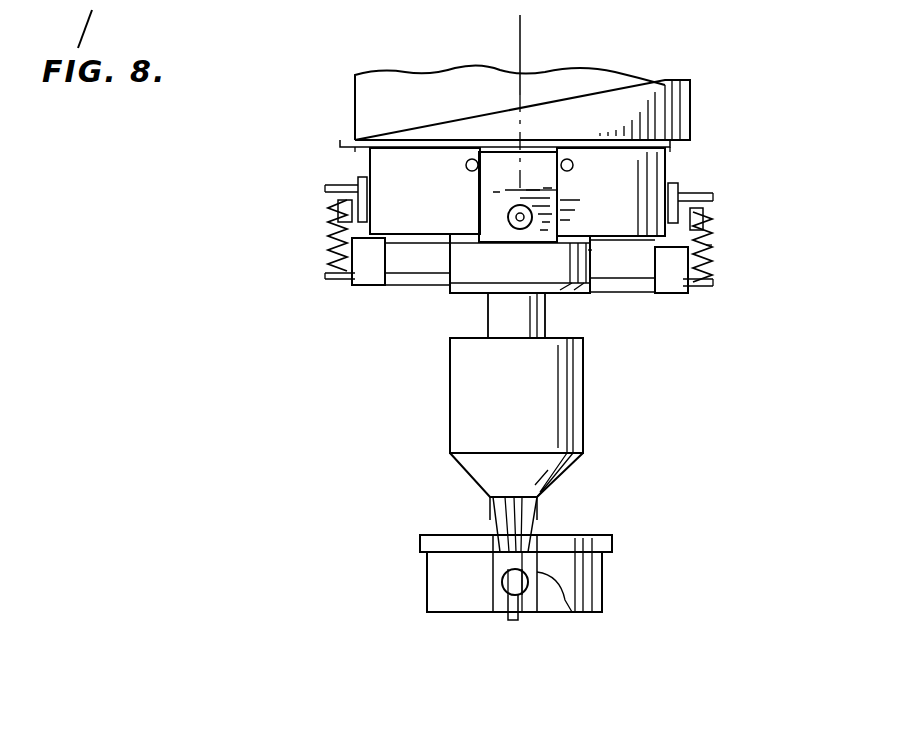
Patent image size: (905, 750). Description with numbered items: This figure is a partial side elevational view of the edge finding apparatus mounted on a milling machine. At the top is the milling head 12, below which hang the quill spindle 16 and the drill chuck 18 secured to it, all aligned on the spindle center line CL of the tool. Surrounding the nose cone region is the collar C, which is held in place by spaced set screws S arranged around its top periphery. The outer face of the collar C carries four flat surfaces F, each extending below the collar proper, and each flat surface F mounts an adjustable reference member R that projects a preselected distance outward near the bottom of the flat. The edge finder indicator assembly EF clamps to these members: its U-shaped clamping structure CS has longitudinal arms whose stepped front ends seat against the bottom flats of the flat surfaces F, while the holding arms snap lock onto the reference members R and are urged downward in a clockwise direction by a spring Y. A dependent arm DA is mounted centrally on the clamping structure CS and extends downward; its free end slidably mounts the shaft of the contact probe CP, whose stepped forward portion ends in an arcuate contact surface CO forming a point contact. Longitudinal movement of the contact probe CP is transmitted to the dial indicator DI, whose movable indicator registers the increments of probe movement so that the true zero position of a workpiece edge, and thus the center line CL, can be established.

The milling head 12 is at (662, 92).
The center line CL is at (520, 38).
The flat surface F is at (530, 162).
The set screw S is at (468, 166).
The collar C is at (672, 165).
The reference member R is at (508, 217).
The spring Y is at (710, 246).
The edge finder indicator assembly EF is at (366, 291).
The U-shaped clamping structure CS is at (672, 282).
The quill spindle 16 is at (598, 258).
The drill chuck 18 is at (518, 420).
The arcuate contact surface CO is at (514, 615).
The dial indicator DI is at (606, 576).
The contact probe CP is at (504, 585).
The dependent arm DA is at (540, 570).